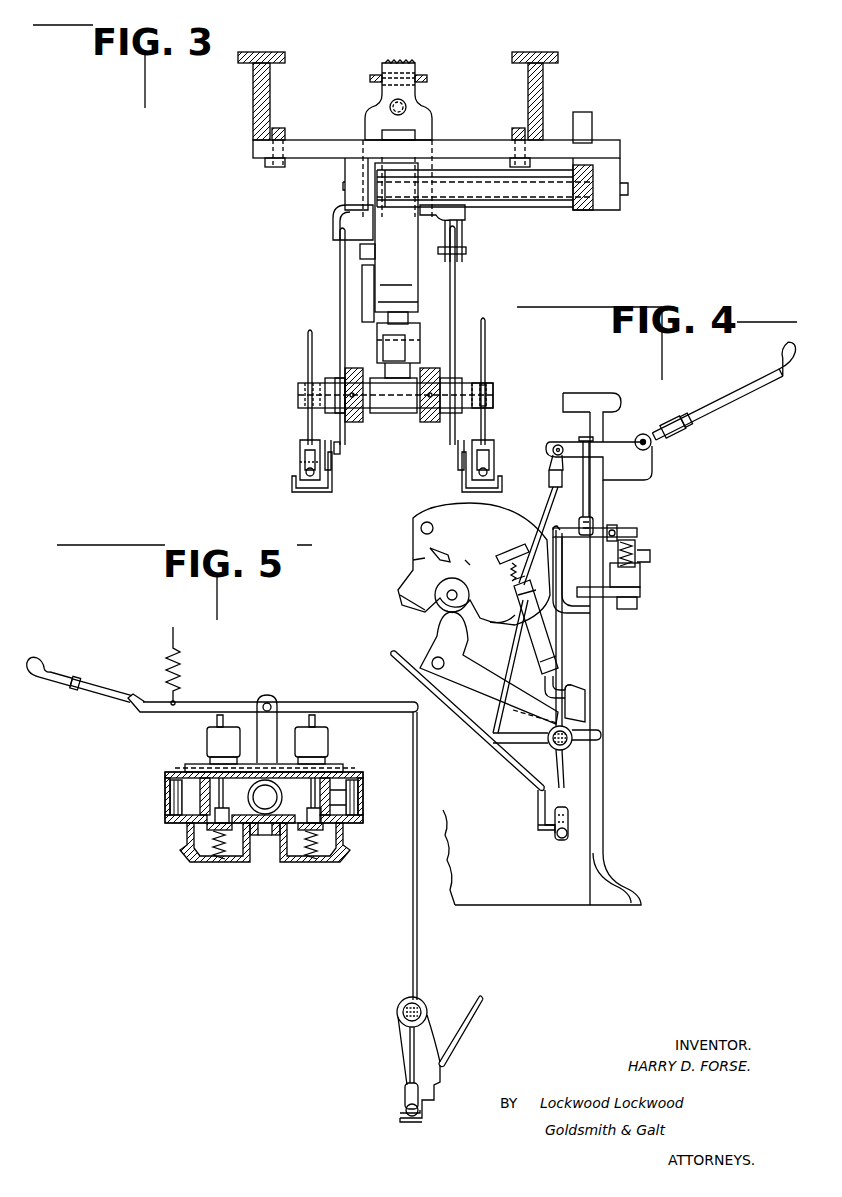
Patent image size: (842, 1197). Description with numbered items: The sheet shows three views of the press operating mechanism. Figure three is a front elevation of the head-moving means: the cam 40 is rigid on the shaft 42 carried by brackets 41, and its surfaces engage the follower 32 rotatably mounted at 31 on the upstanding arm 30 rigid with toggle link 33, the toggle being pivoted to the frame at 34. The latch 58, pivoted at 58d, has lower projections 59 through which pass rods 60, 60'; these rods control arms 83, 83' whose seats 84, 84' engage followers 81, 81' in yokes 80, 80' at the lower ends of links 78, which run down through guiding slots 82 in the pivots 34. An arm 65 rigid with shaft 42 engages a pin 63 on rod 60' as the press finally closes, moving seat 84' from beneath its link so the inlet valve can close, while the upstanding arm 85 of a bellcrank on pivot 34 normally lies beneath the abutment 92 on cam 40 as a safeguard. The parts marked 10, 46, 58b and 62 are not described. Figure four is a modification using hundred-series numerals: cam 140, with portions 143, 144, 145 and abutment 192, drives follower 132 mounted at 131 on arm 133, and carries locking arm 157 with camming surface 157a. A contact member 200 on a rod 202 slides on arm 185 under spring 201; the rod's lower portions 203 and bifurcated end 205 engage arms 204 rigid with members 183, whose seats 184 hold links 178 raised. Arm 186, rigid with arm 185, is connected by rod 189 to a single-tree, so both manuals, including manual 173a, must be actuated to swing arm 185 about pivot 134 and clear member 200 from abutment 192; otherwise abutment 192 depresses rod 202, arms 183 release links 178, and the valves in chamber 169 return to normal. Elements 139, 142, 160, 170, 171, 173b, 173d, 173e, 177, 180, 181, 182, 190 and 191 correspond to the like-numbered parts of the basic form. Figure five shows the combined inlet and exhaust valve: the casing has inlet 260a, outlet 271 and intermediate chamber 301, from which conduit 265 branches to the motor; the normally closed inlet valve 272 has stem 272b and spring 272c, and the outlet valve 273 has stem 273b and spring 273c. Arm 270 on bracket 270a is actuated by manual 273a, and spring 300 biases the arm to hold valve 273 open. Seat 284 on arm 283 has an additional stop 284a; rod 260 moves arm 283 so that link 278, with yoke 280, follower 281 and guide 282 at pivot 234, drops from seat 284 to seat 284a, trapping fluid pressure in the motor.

In FIG. 3, the frame member 10 is at (268, 98).
In FIG. 3, the upstanding arm 30 is at (415, 356).
In FIG. 3, the follower pivot 31 is at (420, 338).
In FIG. 3, the follower 32 is at (392, 322).
In FIG. 3, the toggle link 33 is at (405, 385).
In FIG. 3, the frame pivot 34 is at (494, 393).
In FIG. 3, the cam 40 is at (385, 290).
In FIG. 3, the brackets 41 is at (618, 165).
In FIG. 3, the shaft 42 is at (543, 207).
In FIG. 3, the stop 46 is at (592, 120).
In FIG. 3, the latch 58 is at (368, 122).
In FIG. 3, the pin hole 58b is at (408, 107).
In FIG. 3, the latch pivot 58d is at (378, 83).
In FIG. 3, the projections 59 is at (335, 215).
In FIG. 3, the rod 60 is at (322, 336).
In FIG. 3, the rod 60' is at (469, 335).
In FIG. 3, the clamp 62 is at (337, 455).
In FIG. 3, the pin 63 is at (470, 256).
In FIG. 3, the arm 65 is at (470, 248).
In FIG. 3, the links 78 is at (308, 360).
In FIG. 3, the yoke 80 is at (293, 457).
In FIG. 3, the yoke 80' is at (492, 453).
In FIG. 3, the follower 81 is at (300, 490).
In FIG. 3, the follower 81' is at (502, 461).
In FIG. 3, the guiding slots 82 is at (490, 390).
In FIG. 3, the arm 83 is at (345, 472).
In FIG. 3, the arm 83' is at (443, 459).
In FIG. 3, the seat 84 is at (312, 485).
In FIG. 3, the seat 84' is at (466, 480).
In FIG. 3, the upstanding arm 85 is at (363, 325).
In FIG. 3, the abutment 92 is at (360, 252).
In FIG. 4, the follower pivot 131 is at (455, 605).
In FIG. 4, the follower 132 is at (450, 598).
In FIG. 4, the toggle link 133 is at (475, 695).
In FIG. 4, the pivot 134 is at (574, 745).
In FIG. 4, the hole 139 is at (430, 665).
In FIG. 4, the cam 140 is at (470, 530).
In FIG. 4, the shaft 142 is at (420, 528).
In FIG. 4, the cam portion 143 is at (468, 560).
In FIG. 4, the cam portion 144 is at (500, 610).
In FIG. 4, the cam portion 145 is at (517, 622).
In FIG. 4, the arm 157 is at (420, 563).
In FIG. 4, the camming surface 157a is at (405, 600).
In FIG. 4, the rod 160 is at (520, 775).
In FIG. 4, the chamber 169 is at (635, 583).
In FIG. 4, the bracket 170 is at (615, 528).
In FIG. 4, the rod 171 is at (583, 480).
In FIG. 4, the manual 173a is at (700, 412).
In FIG. 4, the spring 173b is at (635, 547).
In FIG. 4, the manual portion 173d is at (622, 432).
In FIG. 4, the pivot 173e is at (655, 446).
In FIG. 4, the pivot connection 177 is at (559, 530).
In FIG. 4, the links 178 is at (563, 640).
In FIG. 4, the yoke 180 is at (575, 820).
In FIG. 4, the follower 181 is at (564, 840).
In FIG. 4, the guiding slot 182 is at (580, 740).
In FIG. 4, the arms 183 is at (545, 800).
In FIG. 4, the seat 184 is at (548, 838).
In FIG. 4, the arm 185 is at (535, 652).
In FIG. 4, the arm 186 is at (508, 750).
In FIG. 4, the rod 189 is at (547, 512).
In FIG. 4, the single-tree 190 is at (548, 474).
In FIG. 4, the connection 191 is at (556, 440).
In FIG. 4, the abutment 192 is at (512, 556).
In FIG. 4, the contact member 200 is at (505, 563).
In FIG. 4, the spring 201 is at (515, 578).
In FIG. 4, the rod 202 is at (590, 657).
In FIG. 4, the portions 203 is at (580, 703).
In FIG. 4, the arms 204 is at (605, 720).
In FIG. 4, the bifurcated end 205 is at (598, 675).
In FIG. 5, the pivot 234 is at (427, 1014).
In FIG. 5, the rod 260 is at (470, 1025).
In FIG. 5, the fluid inlet 260a is at (168, 790).
In FIG. 5, the conduit 265 is at (266, 802).
In FIG. 5, the arm 270 is at (218, 702).
In FIG. 5, the bracket 270a is at (270, 728).
In FIG. 5, the fluid outlet 271 is at (352, 800).
In FIG. 5, the inlet valve 272 is at (205, 858).
In FIG. 5, the actuating stem 272b is at (220, 722).
In FIG. 5, the valve spring 272c is at (232, 868).
In FIG. 5, the outlet valve 273 is at (338, 862).
In FIG. 5, the manual 273a is at (62, 688).
In FIG. 5, the actuating stem 273b is at (312, 722).
In FIG. 5, the spring 273c is at (302, 866).
In FIG. 5, the link 278 is at (416, 935).
In FIG. 5, the yoke 280 is at (403, 1095).
In FIG. 5, the follower 281 is at (405, 1110).
In FIG. 5, the guiding slot 282 is at (422, 1002).
In FIG. 5, the arm 283 is at (432, 1085).
In FIG. 5, the seat 284 is at (432, 1112).
In FIG. 5, the additional stop 284a is at (410, 1122).
In FIG. 5, the spring 300 is at (170, 660).
In FIG. 5, the intermediate chamber 301 is at (225, 790).